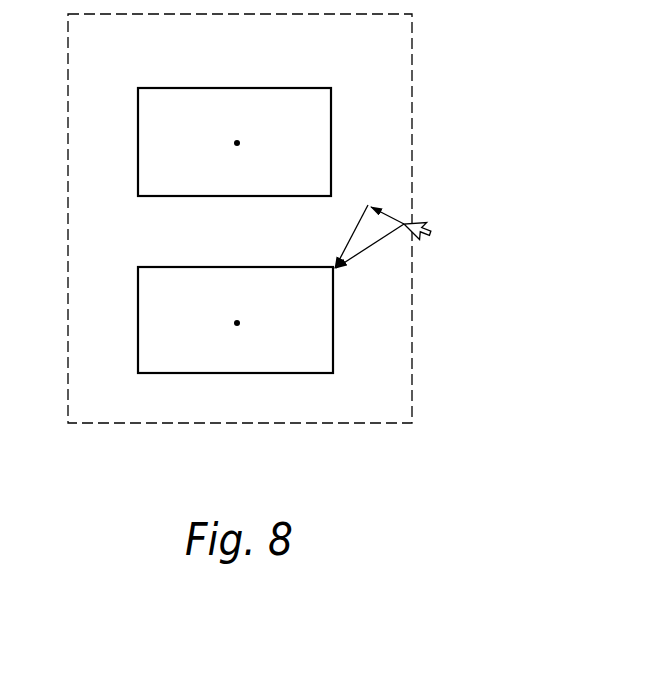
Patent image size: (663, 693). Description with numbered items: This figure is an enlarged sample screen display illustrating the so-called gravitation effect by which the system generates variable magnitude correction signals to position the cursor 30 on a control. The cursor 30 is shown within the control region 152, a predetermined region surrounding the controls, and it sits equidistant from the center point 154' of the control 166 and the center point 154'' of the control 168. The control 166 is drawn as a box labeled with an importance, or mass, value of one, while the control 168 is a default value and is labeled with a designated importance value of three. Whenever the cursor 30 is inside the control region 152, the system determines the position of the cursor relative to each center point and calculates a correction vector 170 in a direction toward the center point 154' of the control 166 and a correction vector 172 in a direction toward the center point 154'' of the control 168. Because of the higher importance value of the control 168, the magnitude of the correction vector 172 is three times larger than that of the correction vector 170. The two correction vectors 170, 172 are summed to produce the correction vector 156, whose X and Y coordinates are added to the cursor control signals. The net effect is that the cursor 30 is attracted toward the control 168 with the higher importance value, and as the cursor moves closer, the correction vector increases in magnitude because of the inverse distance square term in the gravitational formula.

The control region 152 is at (152, 423).
The control 166 is at (203, 88).
The control 168 is at (203, 267).
The center point 154' is at (201, 162).
The center point 154'' is at (201, 340).
The correction vector 156 is at (354, 232).
The correction vector 170 is at (398, 220).
The correction vector 172 is at (370, 250).
The cursor 30 is at (428, 236).